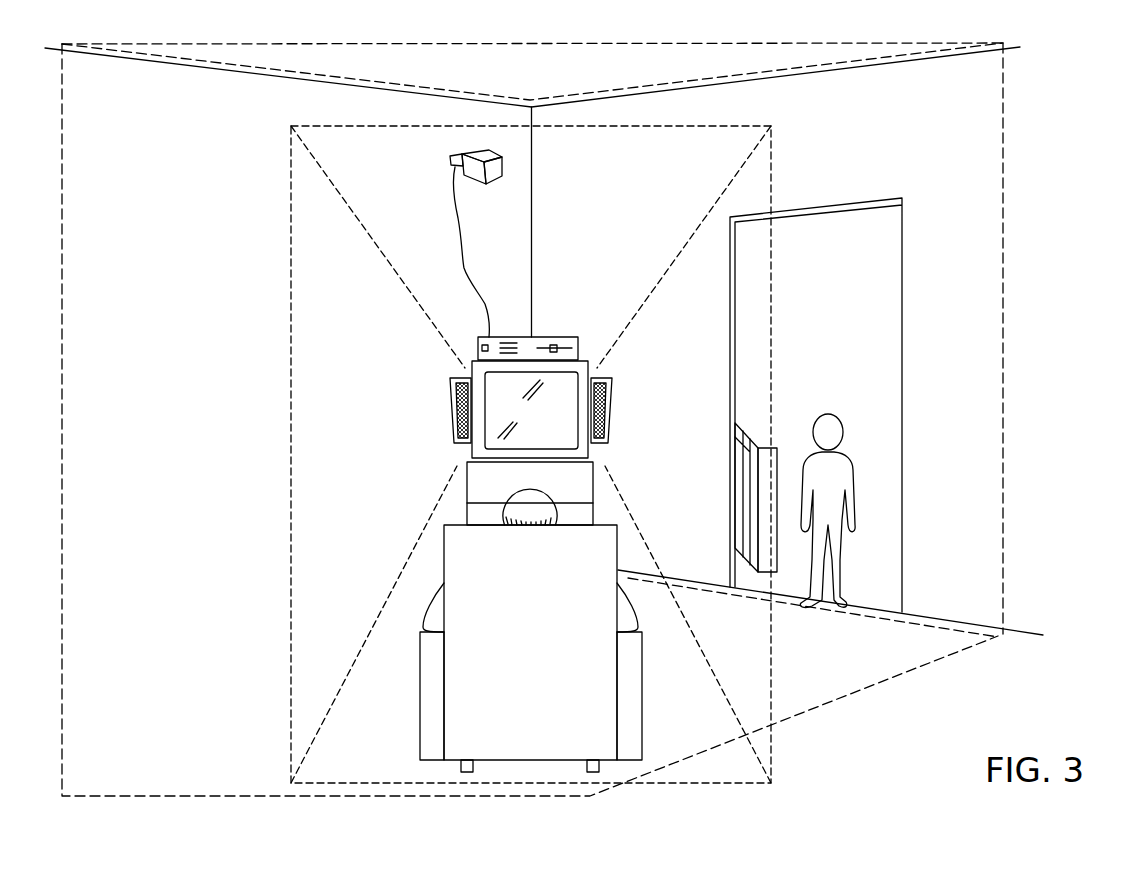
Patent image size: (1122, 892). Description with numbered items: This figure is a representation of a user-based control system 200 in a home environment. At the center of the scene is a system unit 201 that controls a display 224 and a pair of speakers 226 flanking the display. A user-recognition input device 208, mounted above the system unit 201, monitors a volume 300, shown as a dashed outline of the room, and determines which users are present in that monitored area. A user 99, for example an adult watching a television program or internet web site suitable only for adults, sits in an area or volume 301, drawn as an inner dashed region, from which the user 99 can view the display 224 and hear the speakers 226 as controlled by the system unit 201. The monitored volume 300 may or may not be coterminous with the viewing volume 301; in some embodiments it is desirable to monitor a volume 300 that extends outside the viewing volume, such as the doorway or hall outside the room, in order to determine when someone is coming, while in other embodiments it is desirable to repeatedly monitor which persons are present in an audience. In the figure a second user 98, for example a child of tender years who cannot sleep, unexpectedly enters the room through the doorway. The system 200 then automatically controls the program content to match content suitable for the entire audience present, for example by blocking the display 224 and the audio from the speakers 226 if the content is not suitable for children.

The user 98 is at (831, 412).
The user 99 is at (517, 492).
The user-based control system 200 is at (498, 410).
The system unit 201 is at (570, 337).
The user-recognition input device 208 is at (492, 184).
The display 224 is at (570, 439).
The speakers 226 is at (414, 461).
The volume 300 is at (860, 690).
The area 301 is at (773, 748).